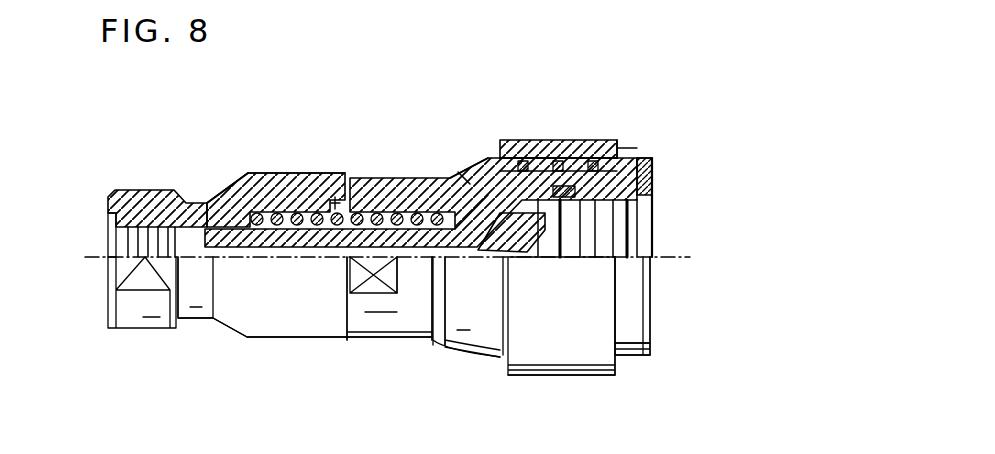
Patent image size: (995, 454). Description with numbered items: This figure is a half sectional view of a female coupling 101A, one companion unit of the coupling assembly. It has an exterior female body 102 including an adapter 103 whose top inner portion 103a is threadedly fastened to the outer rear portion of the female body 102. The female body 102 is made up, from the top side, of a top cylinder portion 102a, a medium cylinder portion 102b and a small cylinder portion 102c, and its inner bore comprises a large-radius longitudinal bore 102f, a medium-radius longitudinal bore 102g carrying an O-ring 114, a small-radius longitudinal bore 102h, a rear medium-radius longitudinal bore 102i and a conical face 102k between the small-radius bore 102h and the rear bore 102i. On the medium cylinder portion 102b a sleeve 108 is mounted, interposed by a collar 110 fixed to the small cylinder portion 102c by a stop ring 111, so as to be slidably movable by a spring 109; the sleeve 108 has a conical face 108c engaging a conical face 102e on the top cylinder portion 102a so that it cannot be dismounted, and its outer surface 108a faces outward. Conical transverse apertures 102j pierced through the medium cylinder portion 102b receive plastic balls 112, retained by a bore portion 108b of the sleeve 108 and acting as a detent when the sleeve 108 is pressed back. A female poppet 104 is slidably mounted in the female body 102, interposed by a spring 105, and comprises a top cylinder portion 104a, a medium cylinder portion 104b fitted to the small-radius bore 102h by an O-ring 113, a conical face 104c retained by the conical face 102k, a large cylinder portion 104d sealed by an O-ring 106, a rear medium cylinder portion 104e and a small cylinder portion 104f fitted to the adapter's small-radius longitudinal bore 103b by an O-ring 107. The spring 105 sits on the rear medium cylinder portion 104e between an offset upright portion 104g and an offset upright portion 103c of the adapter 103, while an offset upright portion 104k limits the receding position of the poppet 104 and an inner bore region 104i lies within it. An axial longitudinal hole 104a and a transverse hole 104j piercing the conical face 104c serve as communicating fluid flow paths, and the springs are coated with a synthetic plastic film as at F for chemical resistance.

The female coupling 101A is at (745, 270).
The female body 102 is at (363, 173).
The top cylinder portion 102a is at (655, 190).
The medium cylinder portion 102b is at (600, 172).
The small cylinder portion 102c is at (447, 173).
The conical face 102e is at (645, 185).
The large-radius longitudinal bore 102f is at (632, 300).
The medium-radius longitudinal bore 102g is at (530, 262).
The small-radius longitudinal bore 102h is at (487, 270).
The rear medium-radius longitudinal bore 102i is at (260, 270).
The conical transverse apertures 102j is at (650, 260).
The conical face 102k is at (503, 252).
The adapter 103 is at (315, 172).
The top inner portion 103a is at (277, 175).
The small-radius longitudinal bore 103b is at (165, 250).
The offset upright portion 103c is at (248, 217).
The female poppet 104 is at (330, 258).
The top cylinder portion / axial longitudinal hole 104a is at (613, 350).
The medium cylinder portion 104b is at (520, 260).
The conical face 104c is at (530, 160).
The large cylinder portion 104d is at (475, 170).
The rear medium cylinder portion 104e is at (452, 148).
The small cylinder portion 104f is at (233, 260).
The offset upright portion 104g is at (410, 262).
The bore 104i is at (255, 317).
The transverse hole 104j is at (443, 262).
The offset upright portion 104k is at (290, 262).
The spring 105 is at (273, 263).
The O-ring 106 is at (418, 262).
The O-ring 107 is at (180, 270).
The sleeve 108 is at (560, 140).
The outer surface of ring nut 108a is at (615, 152).
The bore portion 108b is at (605, 150).
The conical face 108c is at (643, 158).
The spring 109 is at (545, 165).
The collar 110 is at (520, 170).
The stop ring 111 is at (463, 173).
The plastic balls 112 is at (628, 232).
The O-ring 113 is at (478, 260).
The O-ring 114 is at (630, 355).
The synthetic plastic film coating F is at (335, 178).